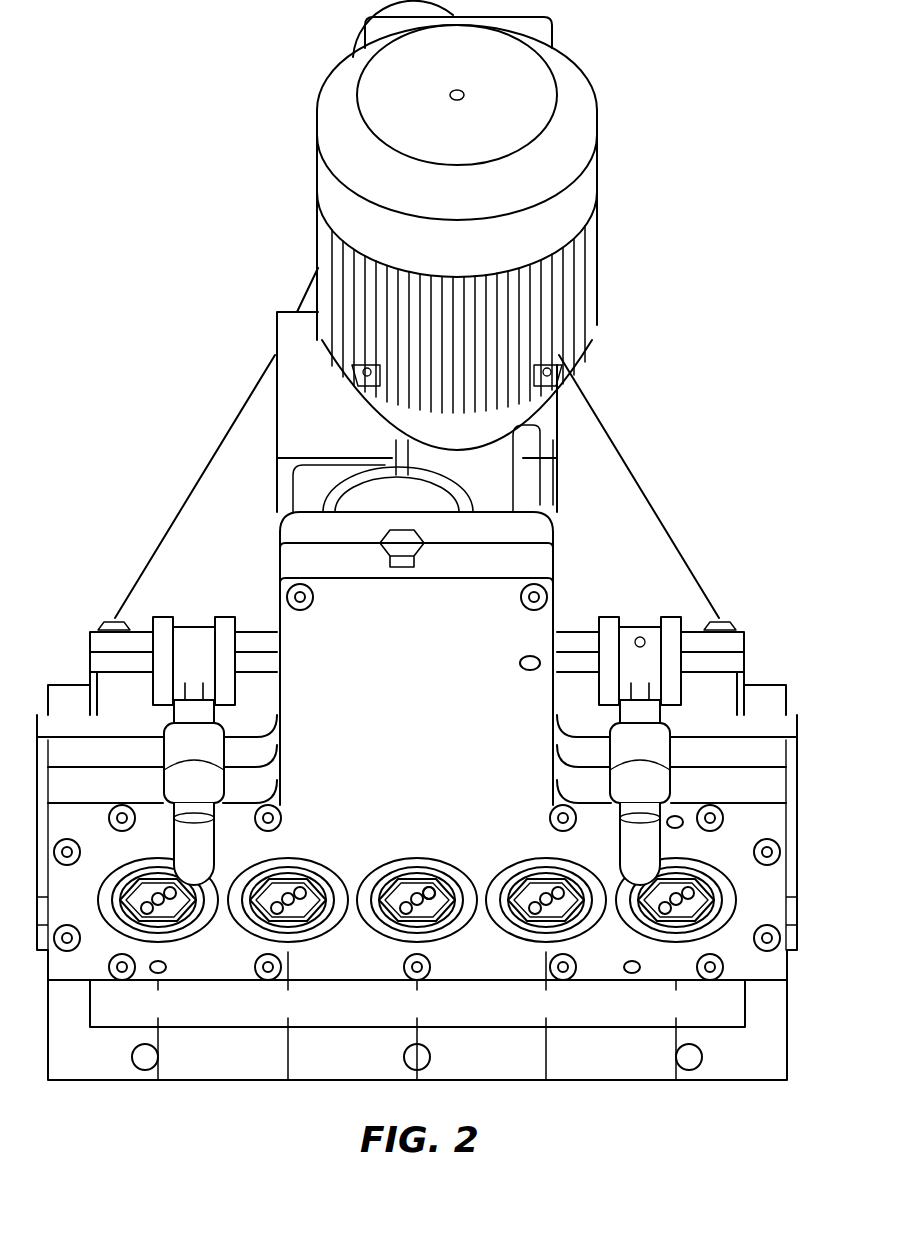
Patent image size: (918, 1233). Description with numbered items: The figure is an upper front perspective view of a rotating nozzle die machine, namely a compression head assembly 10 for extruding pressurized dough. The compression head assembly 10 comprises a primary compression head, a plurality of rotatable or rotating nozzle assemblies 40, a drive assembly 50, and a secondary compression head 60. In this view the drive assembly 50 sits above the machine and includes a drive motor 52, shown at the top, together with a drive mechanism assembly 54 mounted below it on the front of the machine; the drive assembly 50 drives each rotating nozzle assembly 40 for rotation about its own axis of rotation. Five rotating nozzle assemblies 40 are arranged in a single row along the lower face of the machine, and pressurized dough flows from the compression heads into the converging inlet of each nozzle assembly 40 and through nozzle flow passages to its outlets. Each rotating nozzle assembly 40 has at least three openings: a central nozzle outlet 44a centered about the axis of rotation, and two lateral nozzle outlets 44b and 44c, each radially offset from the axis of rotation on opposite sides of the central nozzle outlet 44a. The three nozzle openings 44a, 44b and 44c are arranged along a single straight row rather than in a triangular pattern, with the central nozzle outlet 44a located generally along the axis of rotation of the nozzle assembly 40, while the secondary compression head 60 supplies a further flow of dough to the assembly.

The compression head assembly 10 is at (178, 80).
The drive assembly 50 is at (512, 238).
The drive motor 52 is at (578, 92).
The secondary compression head 60 is at (680, 506).
The drive mechanism assembly 54 is at (528, 627).
The rotating nozzle assembly 40 is at (417, 928).
The central nozzle outlet 44a is at (292, 896).
The lateral nozzle outlet 44b is at (416, 894).
The lateral nozzle outlet 44c is at (429, 912).